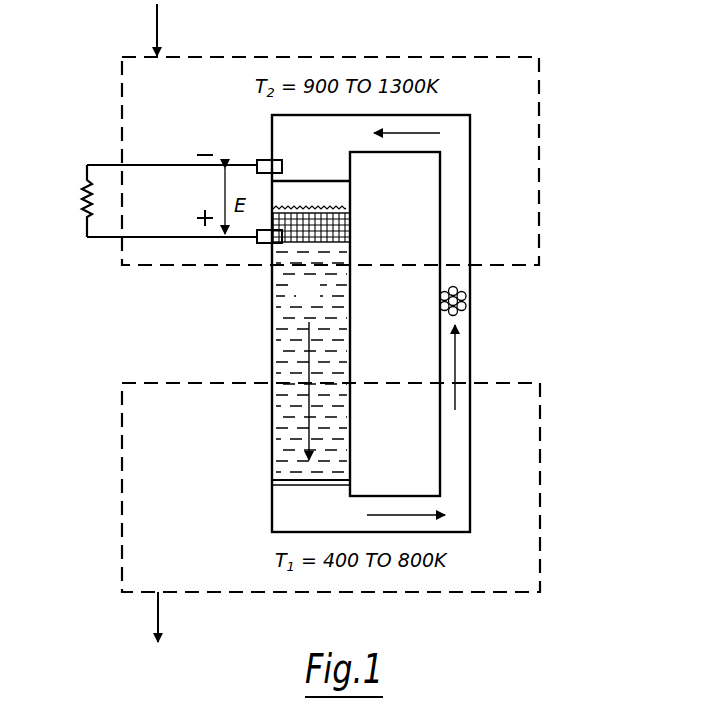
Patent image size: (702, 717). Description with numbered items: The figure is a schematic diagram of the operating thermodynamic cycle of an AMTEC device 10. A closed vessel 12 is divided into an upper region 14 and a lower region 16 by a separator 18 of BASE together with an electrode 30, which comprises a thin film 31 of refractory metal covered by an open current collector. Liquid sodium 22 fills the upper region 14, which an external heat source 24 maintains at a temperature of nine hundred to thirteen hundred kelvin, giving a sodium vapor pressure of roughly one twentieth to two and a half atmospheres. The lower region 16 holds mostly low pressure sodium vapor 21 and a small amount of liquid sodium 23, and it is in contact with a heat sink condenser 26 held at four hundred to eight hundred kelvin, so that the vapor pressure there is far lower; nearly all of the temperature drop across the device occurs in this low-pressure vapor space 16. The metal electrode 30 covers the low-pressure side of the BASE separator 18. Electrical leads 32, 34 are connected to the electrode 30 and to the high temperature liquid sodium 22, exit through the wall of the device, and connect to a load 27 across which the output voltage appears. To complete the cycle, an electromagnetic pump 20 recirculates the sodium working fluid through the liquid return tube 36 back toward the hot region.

The AMTEC device 10 is at (388, 40).
The closed vessel 12 is at (345, 340).
The upper region 14 is at (318, 153).
The lower region 16 is at (318, 305).
The separator 18 is at (328, 192).
The electromagnetic pump 20 is at (466, 308).
The low pressure sodium vapor 21 is at (328, 455).
The liquid sodium 22 is at (283, 122).
The liquid sodium 23 is at (293, 492).
The external heat source 24 is at (541, 191).
The heat sink condenser 26 is at (541, 538).
The load 27 is at (85, 212).
The electrode 30 is at (355, 234).
The thin film 31 is at (345, 207).
The electrical lead 32 is at (172, 164).
The electrical lead 34 is at (113, 238).
The liquid return tube 36 is at (472, 254).